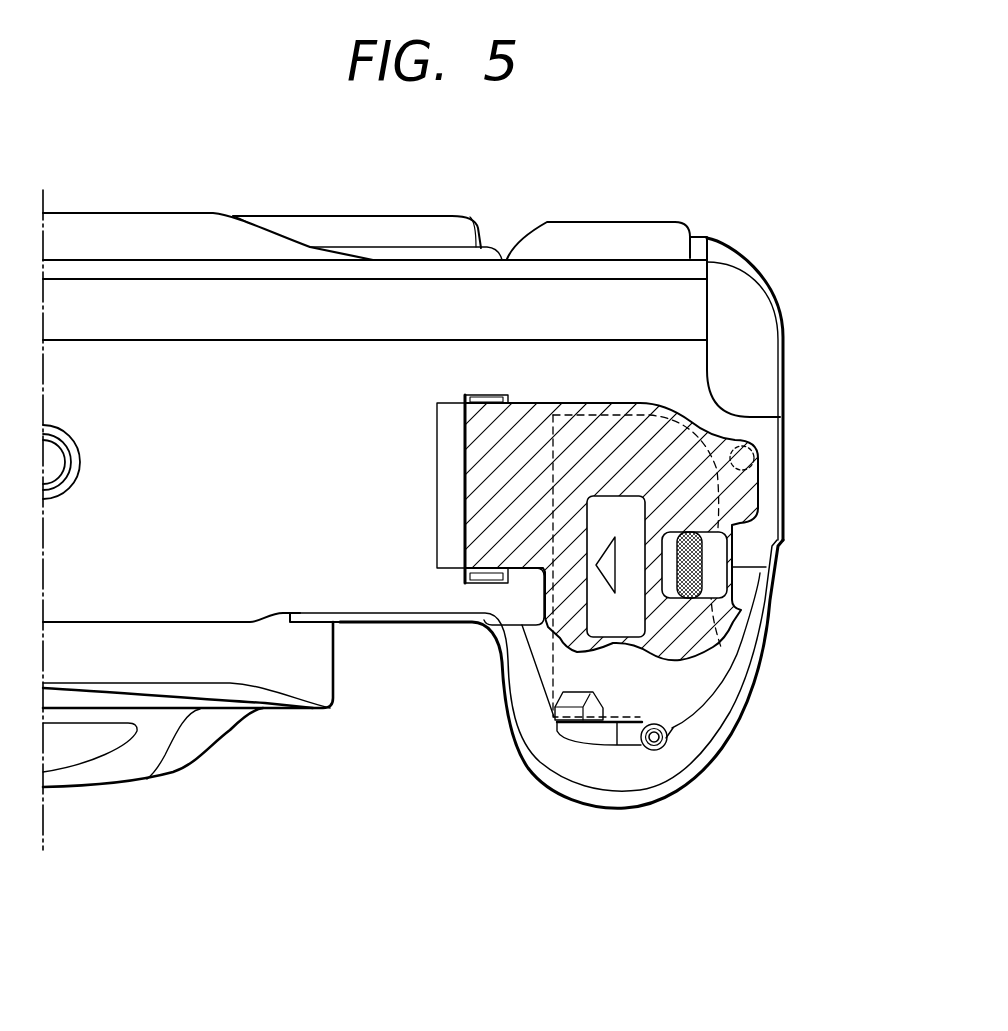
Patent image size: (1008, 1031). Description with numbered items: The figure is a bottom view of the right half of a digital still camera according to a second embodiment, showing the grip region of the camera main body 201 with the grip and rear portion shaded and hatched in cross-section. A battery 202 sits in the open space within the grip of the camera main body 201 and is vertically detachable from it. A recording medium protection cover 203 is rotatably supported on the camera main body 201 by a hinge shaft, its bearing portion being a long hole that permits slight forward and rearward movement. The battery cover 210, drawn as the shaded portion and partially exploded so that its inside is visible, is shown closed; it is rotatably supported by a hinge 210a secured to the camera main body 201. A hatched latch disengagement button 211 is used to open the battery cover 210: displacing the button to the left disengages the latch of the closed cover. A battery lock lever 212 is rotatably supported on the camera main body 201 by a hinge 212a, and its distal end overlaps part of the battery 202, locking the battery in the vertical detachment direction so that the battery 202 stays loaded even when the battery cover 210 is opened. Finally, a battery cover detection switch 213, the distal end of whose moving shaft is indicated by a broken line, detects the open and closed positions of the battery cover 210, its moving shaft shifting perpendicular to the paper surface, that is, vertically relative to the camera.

The camera main body 201 is at (312, 688).
The battery 202 is at (683, 677).
The recording medium protection cover 203 is at (752, 305).
The battery cover 210 is at (733, 480).
The hinge 210a is at (470, 583).
The latch disengagement button 211 is at (703, 582).
The battery lock lever 212 is at (593, 733).
The hinge 212a is at (668, 745).
The battery cover detection switch 213 is at (748, 452).